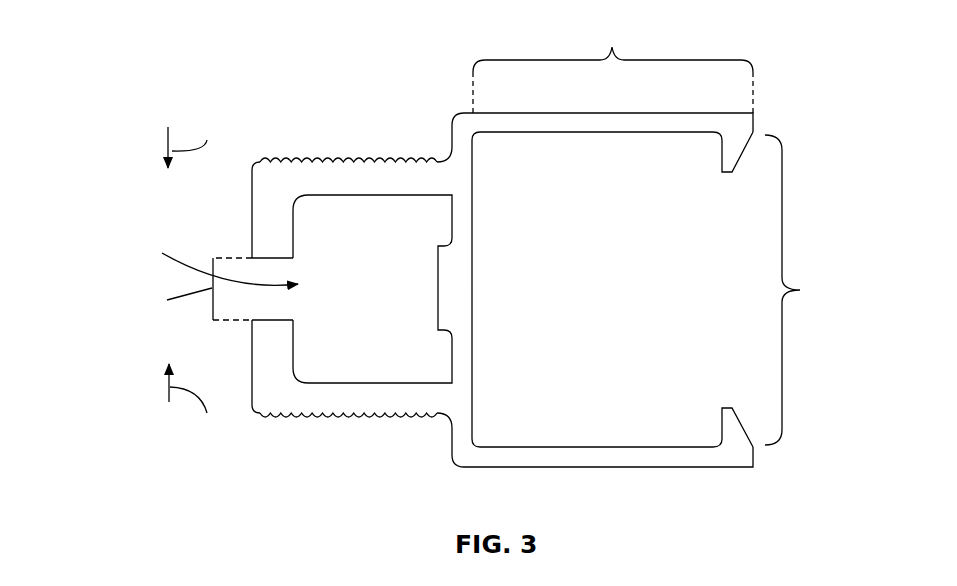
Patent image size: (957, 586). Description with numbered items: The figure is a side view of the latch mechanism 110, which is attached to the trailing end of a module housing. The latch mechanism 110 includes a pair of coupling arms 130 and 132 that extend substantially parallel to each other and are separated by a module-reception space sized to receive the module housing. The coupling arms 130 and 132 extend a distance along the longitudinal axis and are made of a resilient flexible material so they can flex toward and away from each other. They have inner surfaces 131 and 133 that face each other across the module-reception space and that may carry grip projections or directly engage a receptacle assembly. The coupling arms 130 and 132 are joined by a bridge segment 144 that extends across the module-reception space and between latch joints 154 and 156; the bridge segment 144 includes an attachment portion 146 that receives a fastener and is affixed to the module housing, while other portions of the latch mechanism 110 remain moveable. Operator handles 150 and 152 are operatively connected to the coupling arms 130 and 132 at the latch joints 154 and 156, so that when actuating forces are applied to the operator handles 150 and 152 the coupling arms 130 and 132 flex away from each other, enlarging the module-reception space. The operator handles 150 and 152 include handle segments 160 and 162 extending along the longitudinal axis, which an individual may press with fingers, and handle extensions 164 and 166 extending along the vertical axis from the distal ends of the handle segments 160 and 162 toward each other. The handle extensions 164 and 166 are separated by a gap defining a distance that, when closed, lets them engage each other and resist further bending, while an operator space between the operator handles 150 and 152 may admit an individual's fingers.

The latch mechanism 110 is at (170, 74).
The coupling arm 130 is at (678, 113).
The inner surface 131 is at (592, 139).
The coupling arm 132 is at (662, 467).
The inner surface 133 is at (560, 440).
The bridge segment 144 is at (473, 220).
The attachment portion 146 is at (485, 284).
The operator handle 150 is at (262, 162).
The operator handle 152 is at (282, 415).
The latch joint 154 is at (438, 146).
The latch joint 156 is at (434, 429).
The handle segment 160 is at (383, 198).
The handle segment 162 is at (349, 383).
The handle extension 164 is at (293, 232).
The handle extension 166 is at (293, 348).